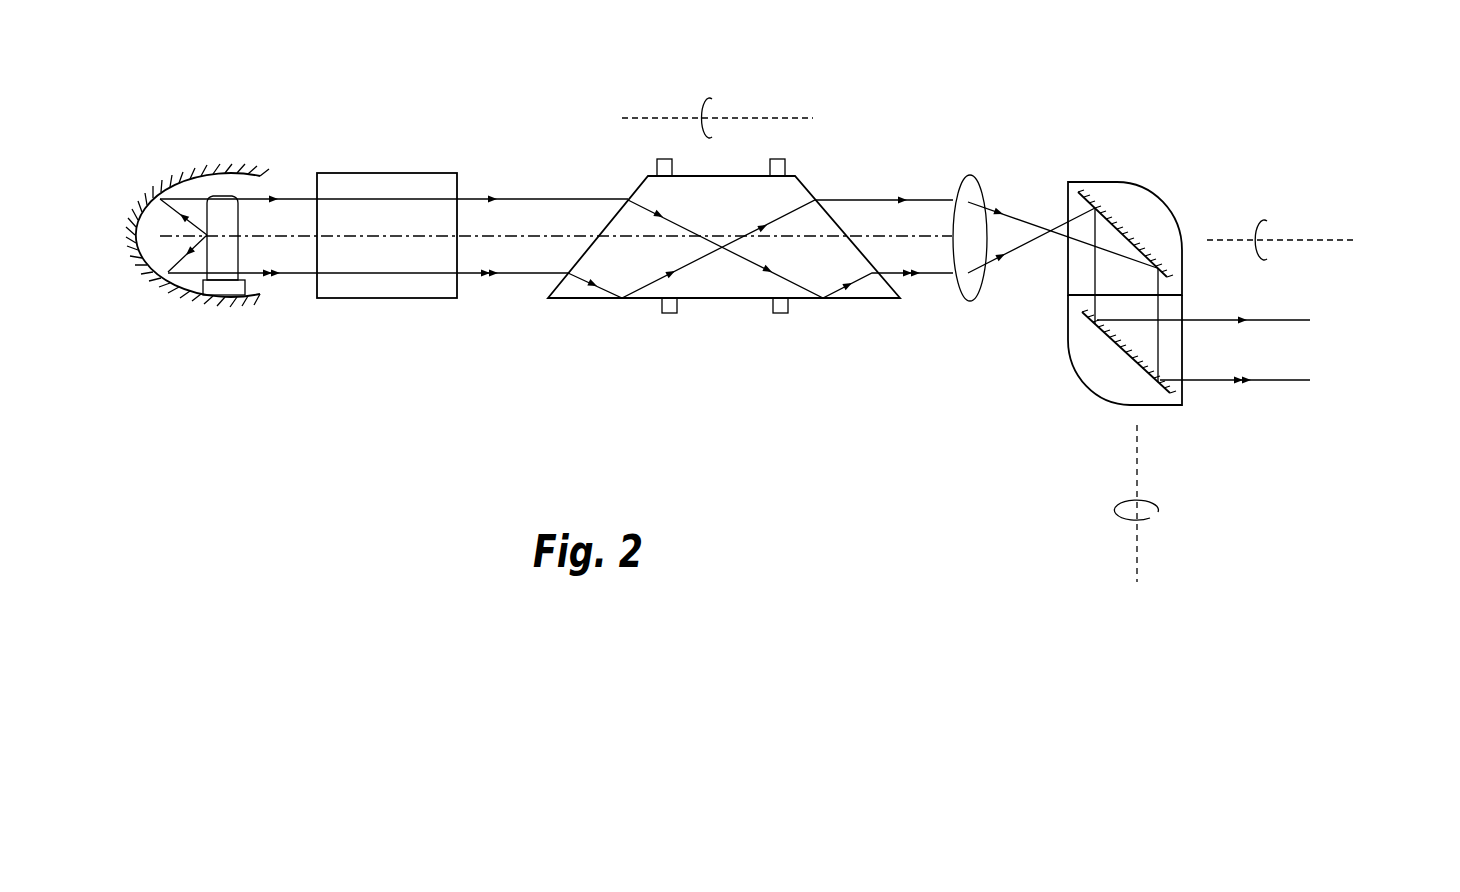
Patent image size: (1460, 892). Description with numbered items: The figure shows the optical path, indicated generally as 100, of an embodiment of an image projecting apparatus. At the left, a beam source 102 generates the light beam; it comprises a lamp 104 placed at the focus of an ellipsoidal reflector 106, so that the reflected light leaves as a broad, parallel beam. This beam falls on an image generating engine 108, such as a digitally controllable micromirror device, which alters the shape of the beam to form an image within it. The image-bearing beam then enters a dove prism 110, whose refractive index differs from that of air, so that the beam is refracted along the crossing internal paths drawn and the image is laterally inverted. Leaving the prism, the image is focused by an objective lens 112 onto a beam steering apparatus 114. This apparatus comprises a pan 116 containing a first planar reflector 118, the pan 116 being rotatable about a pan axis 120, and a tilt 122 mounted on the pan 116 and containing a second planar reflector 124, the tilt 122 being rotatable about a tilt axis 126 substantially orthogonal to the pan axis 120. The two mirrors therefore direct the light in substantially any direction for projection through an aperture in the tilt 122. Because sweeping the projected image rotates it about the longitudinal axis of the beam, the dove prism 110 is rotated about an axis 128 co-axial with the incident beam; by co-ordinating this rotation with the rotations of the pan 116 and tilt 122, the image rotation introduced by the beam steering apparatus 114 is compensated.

The optical path of image projecting apparatus 100 is at (931, 87).
The beam source 102 is at (155, 303).
The lamp 104 is at (226, 296).
The ellipsoidal reflector 106 is at (160, 198).
The image generating engine 108 is at (391, 273).
The dove prism 110 is at (750, 229).
The objective lens 112 is at (968, 176).
The beam steering apparatus 114 is at (1160, 188).
The pan 116 is at (1122, 182).
The first planar reflector 118 is at (1165, 262).
The pan axis 120 is at (1343, 243).
The tilt 122 is at (1078, 380).
The second planar reflector 124 is at (1140, 372).
The tilt axis 126 is at (1137, 563).
The axis 128 is at (540, 236).